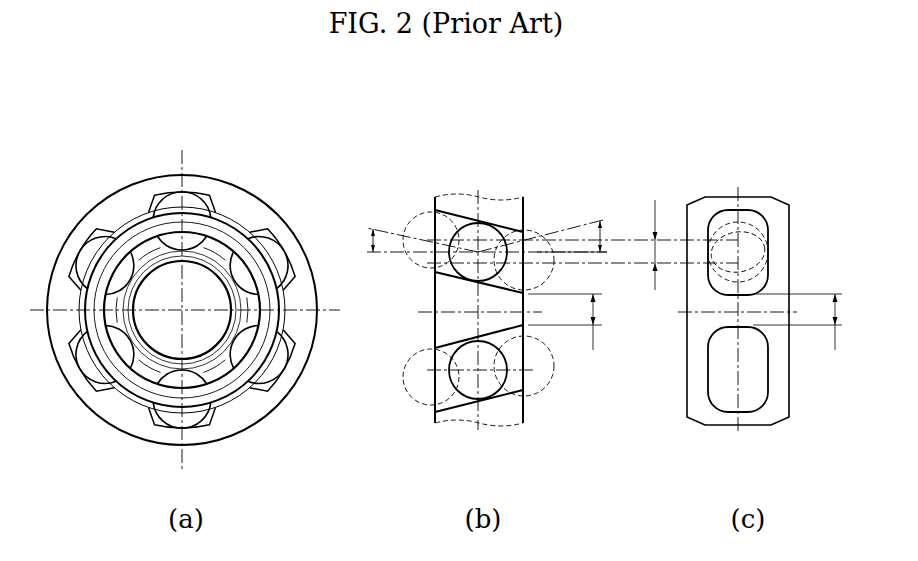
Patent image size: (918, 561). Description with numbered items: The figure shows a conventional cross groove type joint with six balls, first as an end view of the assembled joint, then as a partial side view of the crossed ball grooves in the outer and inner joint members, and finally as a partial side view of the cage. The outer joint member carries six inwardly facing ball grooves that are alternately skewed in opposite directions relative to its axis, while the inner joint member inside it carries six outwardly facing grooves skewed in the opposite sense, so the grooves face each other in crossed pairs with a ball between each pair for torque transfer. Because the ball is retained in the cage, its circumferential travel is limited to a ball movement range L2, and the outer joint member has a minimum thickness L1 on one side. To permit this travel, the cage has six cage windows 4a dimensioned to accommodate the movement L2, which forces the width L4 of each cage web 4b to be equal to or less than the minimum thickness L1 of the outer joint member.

The cage windows 4a is at (748, 380).
The cage web 4b is at (745, 303).
The minimum thickness L1 is at (565, 334).
The ball movement range L2 is at (656, 232).
The width of cage web L4 is at (800, 334).